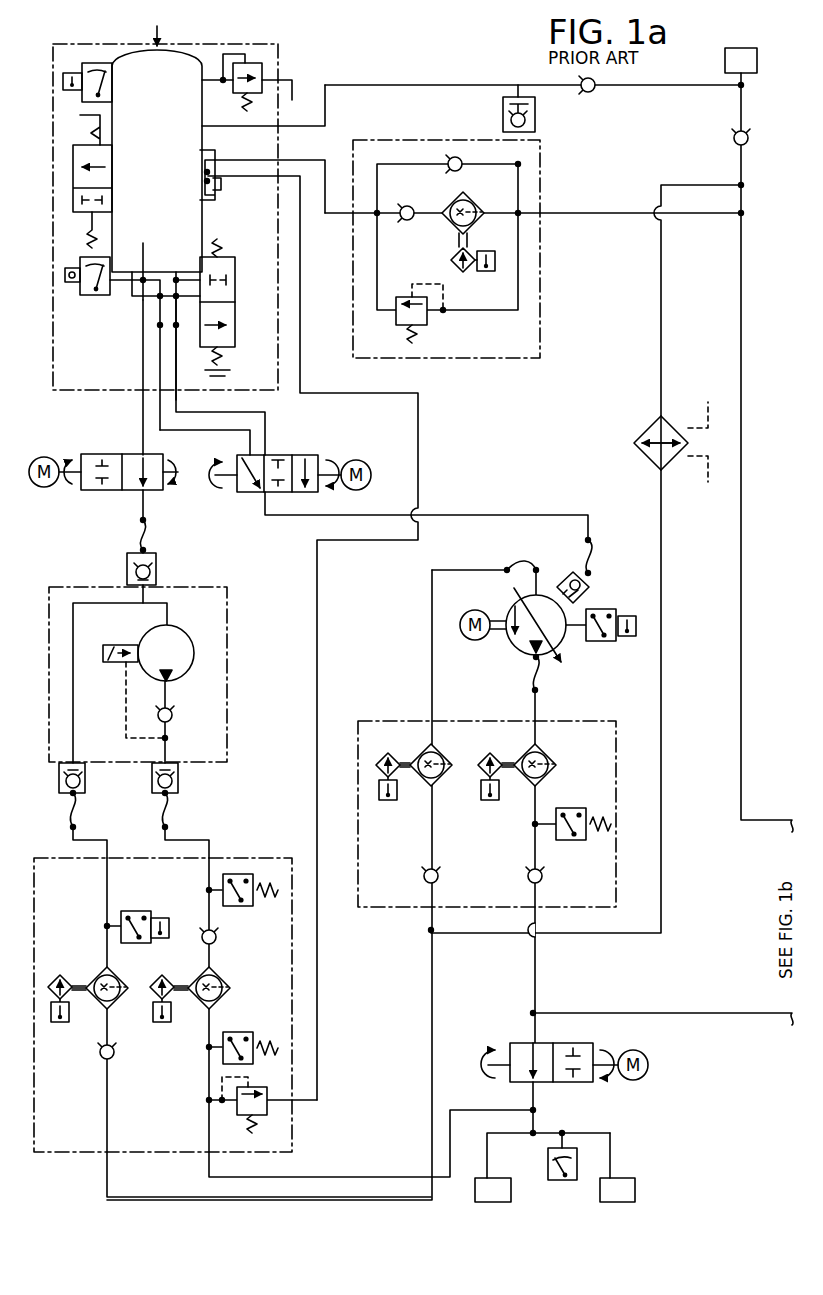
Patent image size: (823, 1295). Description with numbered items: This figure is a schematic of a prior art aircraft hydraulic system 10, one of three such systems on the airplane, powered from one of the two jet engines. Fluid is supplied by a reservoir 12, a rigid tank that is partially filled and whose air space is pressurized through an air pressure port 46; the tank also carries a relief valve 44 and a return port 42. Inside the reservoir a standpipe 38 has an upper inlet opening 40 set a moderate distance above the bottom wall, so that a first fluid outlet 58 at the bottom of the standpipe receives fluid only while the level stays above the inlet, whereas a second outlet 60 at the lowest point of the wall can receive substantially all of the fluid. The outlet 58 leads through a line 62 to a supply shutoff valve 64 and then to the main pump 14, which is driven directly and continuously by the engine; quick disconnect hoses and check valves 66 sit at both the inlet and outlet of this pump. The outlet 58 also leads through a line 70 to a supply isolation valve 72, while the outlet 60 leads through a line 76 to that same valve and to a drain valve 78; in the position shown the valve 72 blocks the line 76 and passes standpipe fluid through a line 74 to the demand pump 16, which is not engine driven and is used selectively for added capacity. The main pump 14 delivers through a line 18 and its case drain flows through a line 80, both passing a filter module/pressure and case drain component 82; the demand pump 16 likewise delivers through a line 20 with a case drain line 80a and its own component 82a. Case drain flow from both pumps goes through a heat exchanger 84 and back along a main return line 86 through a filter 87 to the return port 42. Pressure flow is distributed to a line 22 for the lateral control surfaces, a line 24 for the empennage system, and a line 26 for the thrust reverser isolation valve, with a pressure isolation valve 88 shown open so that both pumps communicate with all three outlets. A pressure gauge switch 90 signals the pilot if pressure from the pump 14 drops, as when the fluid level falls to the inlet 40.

The hydraulic system 10 is at (452, 72).
The reservoir 12 is at (208, 128).
The main pump 14 is at (192, 647).
The demand pump 16 is at (565, 638).
The hydraulic line 18 is at (185, 840).
The hydraulic line 20 is at (536, 710).
The line 22 is at (488, 1176).
The line 24 is at (613, 1166).
The line 26 is at (628, 1013).
The standpipe 38 is at (140, 252).
The upper inlet opening 40 is at (143, 243).
The return port 42 is at (203, 172).
The relief valve 44 is at (262, 78).
The air pressure port 46 is at (150, 29).
The fluid outlet 58 is at (130, 290).
The second outlet 60 is at (176, 280).
The line 62 is at (145, 411).
The supply shutoff valve 64 is at (88, 492).
The quick disconnect hoses and check valves 66 is at (160, 565).
The line 70 is at (215, 430).
The supply isolation valve 72 is at (292, 456).
The line 74 is at (458, 515).
The line 76 is at (250, 410).
The drain valve 78 is at (238, 318).
The case drain line 80 is at (70, 625).
The case drain fluid flow line 80a is at (432, 625).
The filter module/pressure and case drain component 82 is at (85, 1152).
The filter module/pressure and case drain component 82a is at (400, 907).
The heat exchanger 84 is at (650, 452).
The main return line 86 is at (353, 222).
The filter 87 is at (510, 244).
The pressure isolation valve 88 is at (520, 1043).
The pressure gauge switch 90 is at (246, 873).